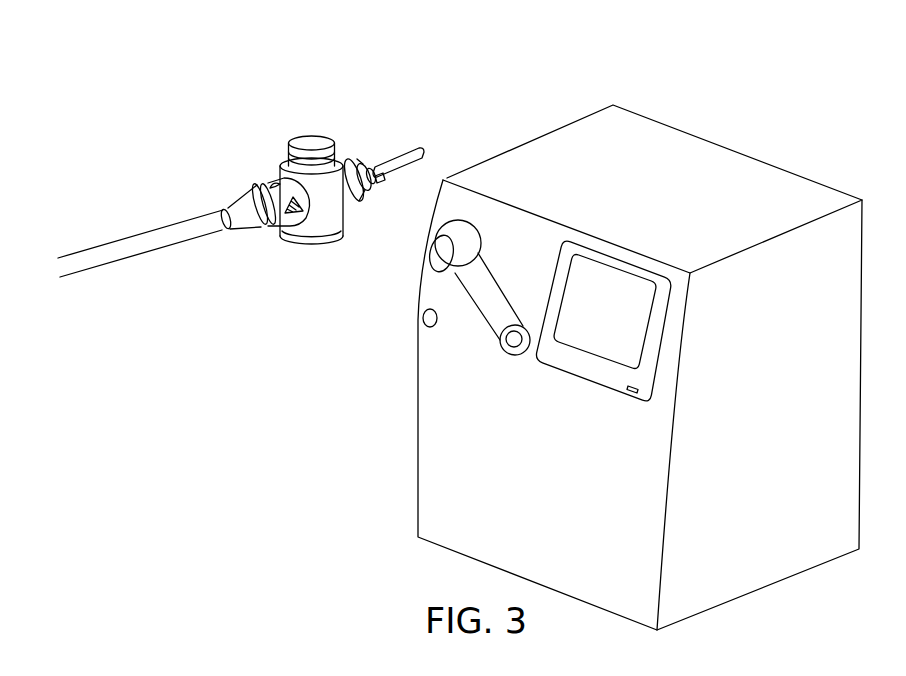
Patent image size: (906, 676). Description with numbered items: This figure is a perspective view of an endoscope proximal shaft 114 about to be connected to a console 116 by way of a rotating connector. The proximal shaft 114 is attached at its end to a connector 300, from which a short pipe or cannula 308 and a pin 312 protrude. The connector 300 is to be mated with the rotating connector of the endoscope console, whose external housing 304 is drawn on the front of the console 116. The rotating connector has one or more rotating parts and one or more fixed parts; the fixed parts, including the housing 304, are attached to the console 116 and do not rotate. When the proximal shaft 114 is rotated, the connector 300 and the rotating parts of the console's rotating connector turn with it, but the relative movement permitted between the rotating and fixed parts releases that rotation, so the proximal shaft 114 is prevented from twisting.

The proximal shaft 114 is at (148, 236).
The console 116 is at (532, 140).
The connector 300 is at (322, 228).
The external housing 304 is at (458, 230).
The short pipe or cannula 308 is at (378, 183).
The pin 312 is at (398, 155).